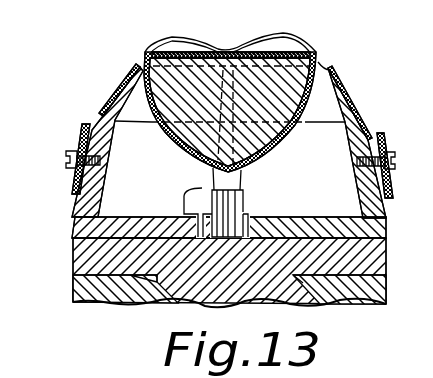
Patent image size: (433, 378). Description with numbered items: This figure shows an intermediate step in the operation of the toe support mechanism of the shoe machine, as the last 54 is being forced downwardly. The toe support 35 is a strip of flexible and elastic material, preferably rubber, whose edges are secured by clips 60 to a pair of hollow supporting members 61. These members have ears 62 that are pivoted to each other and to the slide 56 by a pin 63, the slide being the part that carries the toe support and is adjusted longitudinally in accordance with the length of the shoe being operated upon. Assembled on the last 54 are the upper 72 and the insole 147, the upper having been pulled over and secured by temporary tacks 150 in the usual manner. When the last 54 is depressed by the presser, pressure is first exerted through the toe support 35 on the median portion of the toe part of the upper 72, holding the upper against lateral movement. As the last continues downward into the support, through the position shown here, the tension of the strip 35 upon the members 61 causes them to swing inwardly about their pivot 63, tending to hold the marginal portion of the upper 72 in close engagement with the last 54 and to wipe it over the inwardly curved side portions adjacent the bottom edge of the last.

The toe support 35 is at (330, 67).
The last 54 is at (263, 107).
The slide 56 is at (78, 261).
The clips 60 is at (85, 131).
The hollow supporting members 61 is at (113, 92).
The ears 62 is at (246, 210).
The pin 63 is at (202, 188).
The upper 72 is at (178, 150).
The insole 147 is at (175, 50).
The temporary tacks 150 is at (227, 47).